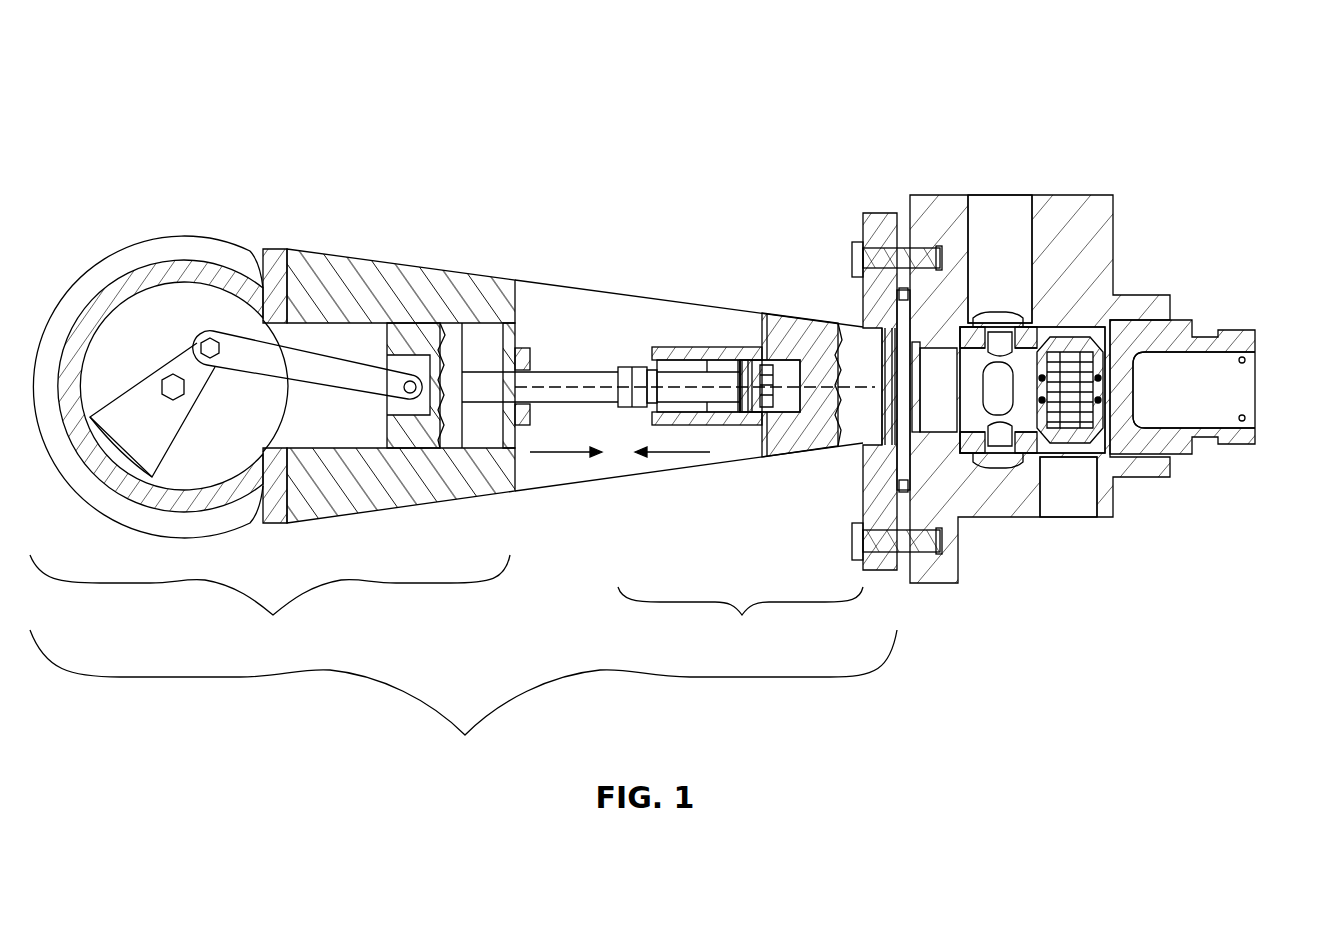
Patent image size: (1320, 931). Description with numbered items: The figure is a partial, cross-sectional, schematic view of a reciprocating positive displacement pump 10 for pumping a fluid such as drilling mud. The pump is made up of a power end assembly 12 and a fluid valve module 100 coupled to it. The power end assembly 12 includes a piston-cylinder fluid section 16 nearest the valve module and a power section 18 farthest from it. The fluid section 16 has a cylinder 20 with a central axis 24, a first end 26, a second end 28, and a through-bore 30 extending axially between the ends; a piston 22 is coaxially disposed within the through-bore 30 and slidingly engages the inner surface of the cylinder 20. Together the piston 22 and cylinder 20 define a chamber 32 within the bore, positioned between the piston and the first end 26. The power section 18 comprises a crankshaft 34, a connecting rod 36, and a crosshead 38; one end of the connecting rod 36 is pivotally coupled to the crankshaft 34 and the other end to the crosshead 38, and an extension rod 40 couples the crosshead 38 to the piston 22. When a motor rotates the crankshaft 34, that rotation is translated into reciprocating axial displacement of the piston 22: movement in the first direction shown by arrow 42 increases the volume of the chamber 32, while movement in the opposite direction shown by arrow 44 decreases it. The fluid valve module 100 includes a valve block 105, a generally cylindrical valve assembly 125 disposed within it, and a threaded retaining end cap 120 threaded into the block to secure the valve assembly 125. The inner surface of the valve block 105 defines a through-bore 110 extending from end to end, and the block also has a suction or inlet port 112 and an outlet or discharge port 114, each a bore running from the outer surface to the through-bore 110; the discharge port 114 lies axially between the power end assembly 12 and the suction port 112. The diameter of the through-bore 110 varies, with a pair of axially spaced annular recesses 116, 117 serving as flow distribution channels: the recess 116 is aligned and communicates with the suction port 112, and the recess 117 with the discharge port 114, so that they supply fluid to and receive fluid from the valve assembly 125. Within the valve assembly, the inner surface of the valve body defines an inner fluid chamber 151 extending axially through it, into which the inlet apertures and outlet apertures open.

The positive displacement pump 10 is at (143, 139).
The power end assembly 12 is at (463, 697).
The piston-cylinder fluid section 16 is at (780, 430).
The power section 18 is at (446, 448).
The cylinder 20 is at (708, 355).
The piston 22 is at (773, 358).
The central axis 24 is at (577, 388).
The first end 26 is at (838, 412).
The second end 28 is at (652, 388).
The through-bore 30 is at (687, 365).
The chamber 32 is at (790, 372).
The crankshaft 34 is at (172, 353).
The connecting rod 36 is at (290, 363).
The crosshead 38 is at (405, 335).
The extension rod 40 is at (530, 388).
The arrow 42 is at (672, 456).
The arrow 44 is at (568, 456).
The fluid valve module 100 is at (1115, 125).
The valve block 105 is at (913, 203).
The through-bore 110 is at (978, 440).
The suction or inlet port 112 is at (1063, 500).
The outlet or discharge port 114 is at (1012, 203).
The annular recess 116 is at (1092, 312).
The annular recess 117 is at (990, 317).
The threaded retaining end cap 120 is at (1252, 323).
The valve assembly 125 is at (1113, 317).
The inner fluid chamber 151 is at (973, 405).